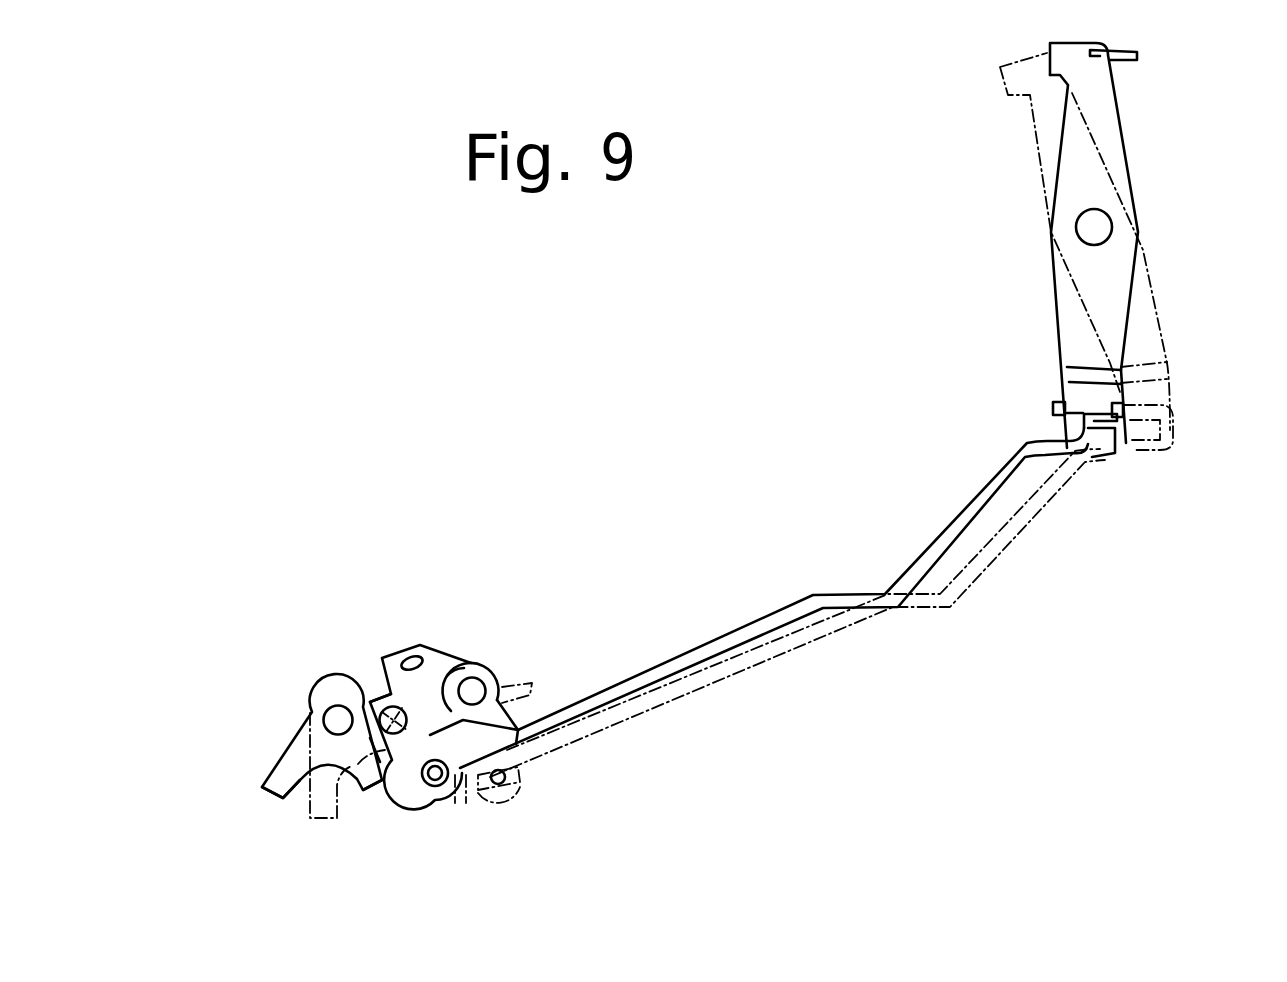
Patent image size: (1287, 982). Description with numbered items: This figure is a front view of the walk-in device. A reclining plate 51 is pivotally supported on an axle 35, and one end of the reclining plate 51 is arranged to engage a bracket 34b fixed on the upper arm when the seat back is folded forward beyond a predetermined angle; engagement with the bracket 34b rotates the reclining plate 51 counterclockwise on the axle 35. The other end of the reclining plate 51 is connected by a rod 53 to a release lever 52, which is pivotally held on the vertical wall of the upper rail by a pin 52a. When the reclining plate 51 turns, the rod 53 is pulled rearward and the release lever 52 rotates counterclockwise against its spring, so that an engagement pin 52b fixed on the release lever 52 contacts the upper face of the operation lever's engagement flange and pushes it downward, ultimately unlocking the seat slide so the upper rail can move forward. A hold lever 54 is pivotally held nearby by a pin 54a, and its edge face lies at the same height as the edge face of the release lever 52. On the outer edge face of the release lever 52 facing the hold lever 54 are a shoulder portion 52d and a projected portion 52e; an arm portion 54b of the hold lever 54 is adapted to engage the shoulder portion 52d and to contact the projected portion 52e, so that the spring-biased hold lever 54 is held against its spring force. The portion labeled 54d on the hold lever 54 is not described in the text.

The bracket 34b is at (1138, 57).
The axle 35 is at (1106, 227).
The reclining plate 51 is at (1068, 312).
The rod 53 is at (830, 596).
The release lever 52 is at (408, 642).
The pin 52a is at (472, 691).
The engagement pin 52b is at (383, 707).
The shoulder portion 52d is at (372, 700).
The projected portion 52e is at (415, 787).
The hold lever 54 is at (280, 755).
The pin 54a is at (332, 722).
The arm portion 54b is at (374, 790).
The arm end 54d is at (277, 790).